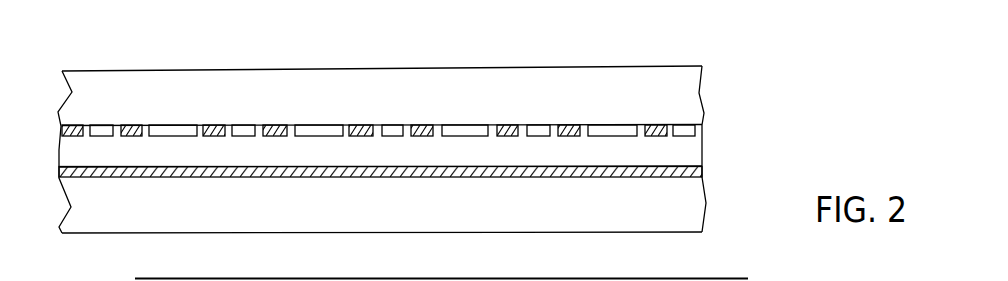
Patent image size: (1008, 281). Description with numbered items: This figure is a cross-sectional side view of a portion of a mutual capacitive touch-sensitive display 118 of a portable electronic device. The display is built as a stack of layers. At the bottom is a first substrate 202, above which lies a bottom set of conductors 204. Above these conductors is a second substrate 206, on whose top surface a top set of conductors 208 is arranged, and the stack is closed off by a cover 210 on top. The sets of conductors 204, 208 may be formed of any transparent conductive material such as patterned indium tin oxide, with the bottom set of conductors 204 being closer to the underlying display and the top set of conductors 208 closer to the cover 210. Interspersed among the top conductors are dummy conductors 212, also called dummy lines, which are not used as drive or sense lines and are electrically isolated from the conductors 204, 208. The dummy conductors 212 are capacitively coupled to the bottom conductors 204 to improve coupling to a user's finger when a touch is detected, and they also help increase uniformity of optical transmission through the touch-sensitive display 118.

The touch-sensitive display 118 is at (722, 36).
The first substrate 202 is at (682, 216).
The bottom set of conductors 204 is at (703, 170).
The second substrate 206 is at (703, 148).
The top set of conductors 208 is at (354, 125).
The cover 210 is at (682, 100).
The dummy conductors 212 is at (607, 125).